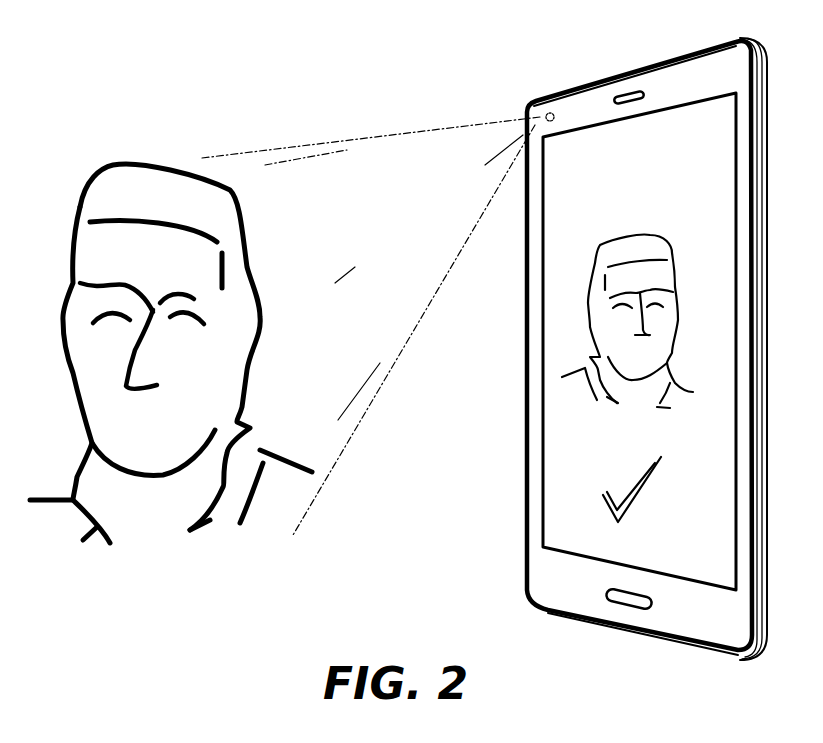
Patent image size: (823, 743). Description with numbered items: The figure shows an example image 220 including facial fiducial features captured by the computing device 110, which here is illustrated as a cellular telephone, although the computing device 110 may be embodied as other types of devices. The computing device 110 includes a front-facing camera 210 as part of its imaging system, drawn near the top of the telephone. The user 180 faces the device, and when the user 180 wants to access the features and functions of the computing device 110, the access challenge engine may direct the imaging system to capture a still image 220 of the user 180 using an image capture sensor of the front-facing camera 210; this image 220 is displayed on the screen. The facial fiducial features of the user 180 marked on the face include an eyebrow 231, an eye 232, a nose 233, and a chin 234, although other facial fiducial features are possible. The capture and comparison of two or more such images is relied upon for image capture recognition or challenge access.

The computing device 110 is at (750, 40).
The user 180 is at (173, 353).
The front-facing camera 210 is at (555, 114).
The image 220 is at (667, 212).
The eyebrow 231 is at (113, 286).
The eye 232 is at (193, 320).
The nose 233 is at (127, 381).
The chin 234 is at (138, 478).